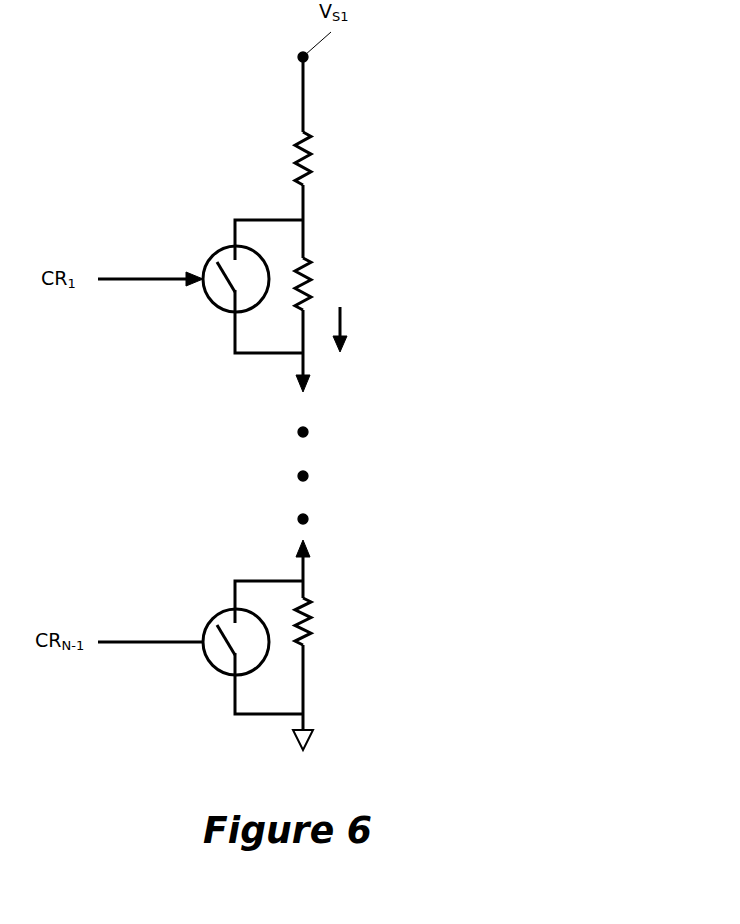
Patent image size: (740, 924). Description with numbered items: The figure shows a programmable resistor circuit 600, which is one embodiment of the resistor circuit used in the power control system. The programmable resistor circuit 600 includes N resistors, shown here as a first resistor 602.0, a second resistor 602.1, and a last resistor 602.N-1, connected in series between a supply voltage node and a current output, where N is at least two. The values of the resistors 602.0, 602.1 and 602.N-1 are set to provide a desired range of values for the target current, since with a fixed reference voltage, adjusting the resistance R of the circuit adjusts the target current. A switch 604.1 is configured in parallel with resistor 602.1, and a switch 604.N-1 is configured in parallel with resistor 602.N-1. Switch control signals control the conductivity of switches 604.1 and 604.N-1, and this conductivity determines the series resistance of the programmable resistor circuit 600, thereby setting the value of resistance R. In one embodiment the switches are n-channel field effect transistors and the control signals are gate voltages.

The programmable resistor circuit 600 is at (410, 228).
The resistor 602.0 is at (311, 166).
The resistor 602.1 is at (311, 260).
The resistor 602.N-1 is at (360, 611).
The switch 604.1 is at (227, 252).
The switch 604.N-1 is at (227, 612).